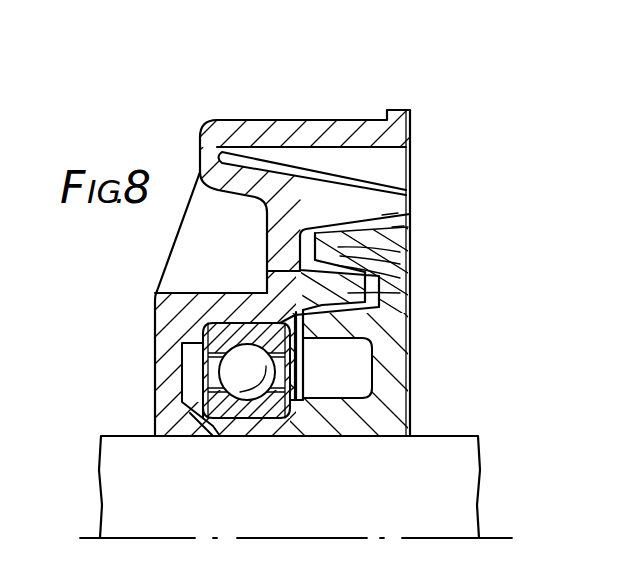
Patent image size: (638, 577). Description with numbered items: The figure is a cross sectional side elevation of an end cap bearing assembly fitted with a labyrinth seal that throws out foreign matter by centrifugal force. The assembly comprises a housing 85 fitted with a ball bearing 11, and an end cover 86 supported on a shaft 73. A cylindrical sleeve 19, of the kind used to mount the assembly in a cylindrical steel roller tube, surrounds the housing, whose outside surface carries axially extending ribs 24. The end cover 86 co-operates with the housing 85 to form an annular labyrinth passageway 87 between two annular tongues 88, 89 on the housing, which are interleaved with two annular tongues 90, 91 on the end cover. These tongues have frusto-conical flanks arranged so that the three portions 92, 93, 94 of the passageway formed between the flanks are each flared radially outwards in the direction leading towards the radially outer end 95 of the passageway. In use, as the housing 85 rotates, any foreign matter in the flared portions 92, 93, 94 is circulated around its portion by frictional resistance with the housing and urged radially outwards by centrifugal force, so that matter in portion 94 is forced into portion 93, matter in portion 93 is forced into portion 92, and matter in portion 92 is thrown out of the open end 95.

The cylindrical sleeve 19 is at (303, 121).
The axially extending rib 24 is at (313, 162).
The shaft 73 is at (453, 478).
The housing 85 is at (155, 318).
The end cover 86 is at (408, 402).
The annular labyrinth passageway 87 is at (305, 252).
The annular tongue 88 is at (398, 197).
The annular tongue 89 is at (335, 265).
The annular tongue 90 is at (338, 247).
The annular tongue 91 is at (325, 325).
The flared portion of passageway 92 is at (390, 217).
The flared portion of passageway 93 is at (340, 256).
The flared portion of passageway 94 is at (348, 293).
The radially outer end 95 is at (396, 225).
The ball bearing 11 is at (190, 370).